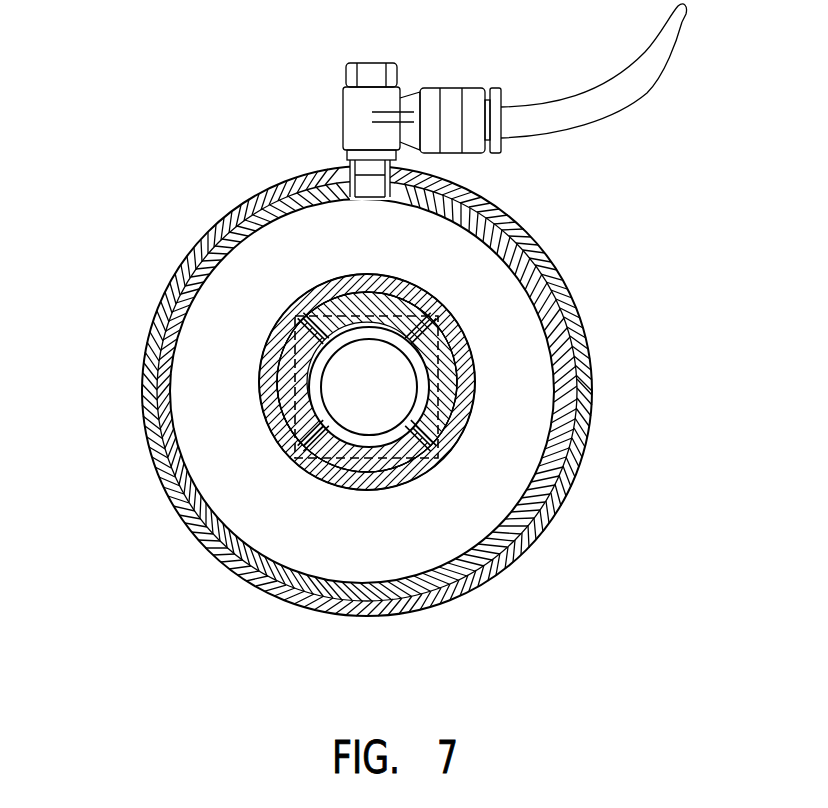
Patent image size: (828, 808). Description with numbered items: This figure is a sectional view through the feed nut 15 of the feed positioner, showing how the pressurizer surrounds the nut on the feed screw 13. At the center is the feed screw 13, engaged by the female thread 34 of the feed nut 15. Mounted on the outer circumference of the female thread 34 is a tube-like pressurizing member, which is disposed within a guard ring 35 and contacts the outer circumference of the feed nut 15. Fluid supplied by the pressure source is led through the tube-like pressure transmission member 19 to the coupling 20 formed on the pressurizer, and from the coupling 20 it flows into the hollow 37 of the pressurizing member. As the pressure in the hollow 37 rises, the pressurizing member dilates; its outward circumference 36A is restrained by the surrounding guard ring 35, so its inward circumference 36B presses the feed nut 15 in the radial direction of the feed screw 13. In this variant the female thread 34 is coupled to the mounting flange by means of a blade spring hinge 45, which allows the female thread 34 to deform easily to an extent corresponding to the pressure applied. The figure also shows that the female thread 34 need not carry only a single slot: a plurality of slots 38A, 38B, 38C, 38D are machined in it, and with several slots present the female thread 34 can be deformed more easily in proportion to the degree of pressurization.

The feed screw 13 is at (347, 360).
The feed nut 15 is at (300, 447).
The pressure transmission member 19 is at (613, 82).
The coupling 20 is at (353, 122).
The female thread 34 is at (300, 417).
The guard ring 35 is at (143, 347).
The outward circumference 36A is at (550, 353).
The inward circumference 36B is at (470, 420).
The hollow 37 is at (333, 548).
The slot 38A is at (428, 332).
The slot 38B is at (432, 450).
The slot 38C is at (304, 449).
The slot 38D is at (316, 330).
The blade spring hinge 45 is at (381, 274).